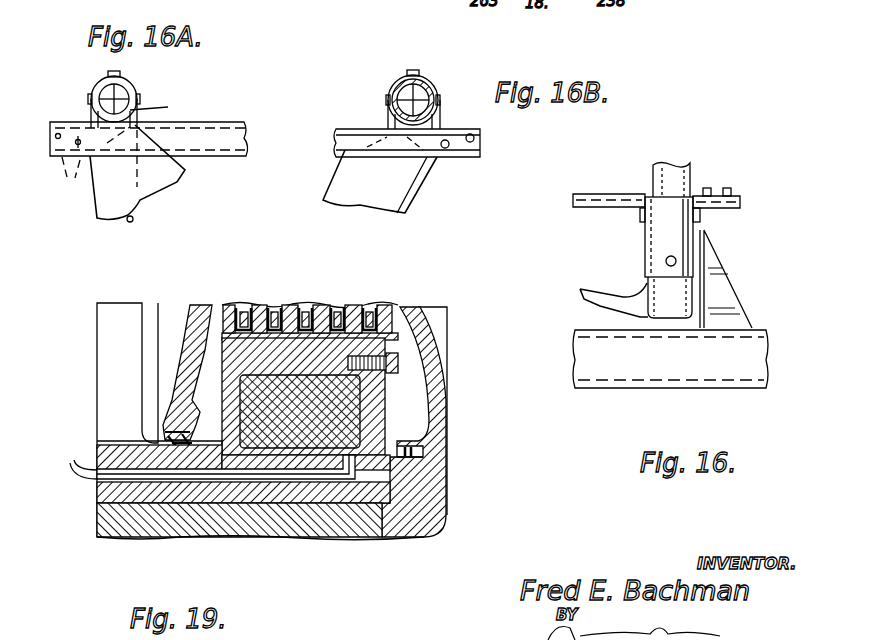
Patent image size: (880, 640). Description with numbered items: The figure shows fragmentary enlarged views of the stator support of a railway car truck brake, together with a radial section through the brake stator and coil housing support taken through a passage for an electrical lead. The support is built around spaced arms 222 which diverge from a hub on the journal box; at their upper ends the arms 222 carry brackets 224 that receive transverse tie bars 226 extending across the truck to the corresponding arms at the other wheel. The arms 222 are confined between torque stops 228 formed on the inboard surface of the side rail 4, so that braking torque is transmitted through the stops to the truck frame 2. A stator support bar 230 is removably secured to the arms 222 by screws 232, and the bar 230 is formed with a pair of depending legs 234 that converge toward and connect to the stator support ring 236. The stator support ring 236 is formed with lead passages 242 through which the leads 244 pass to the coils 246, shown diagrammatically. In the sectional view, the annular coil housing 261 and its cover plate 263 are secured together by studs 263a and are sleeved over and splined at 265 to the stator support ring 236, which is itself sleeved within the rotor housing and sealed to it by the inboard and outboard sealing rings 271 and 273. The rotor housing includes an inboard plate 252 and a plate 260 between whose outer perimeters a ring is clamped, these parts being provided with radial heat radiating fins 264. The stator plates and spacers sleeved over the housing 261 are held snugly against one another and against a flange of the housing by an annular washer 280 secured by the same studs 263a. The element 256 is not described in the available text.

In FIG. 16, the truck frame 2 is at (764, 392).
In FIG. 16, the side rail 4 is at (606, 370).
In FIG. 16A, the arms 222 is at (170, 180).
In FIG. 16B, the arms 222 is at (400, 195).
In FIG. 16, the arms 222 is at (588, 296).
In FIG. 16A, the brackets 224 is at (136, 88).
In FIG. 16B, the brackets 224 is at (432, 82).
In FIG. 16, the brackets 224 is at (657, 240).
In FIG. 16A, the tie bars 226 is at (165, 234).
In FIG. 16B, the tie bars 226 is at (402, 88).
In FIG. 16, the tie bars 226 is at (692, 168).
In FIG. 16, the torque stops 228 is at (706, 298).
In FIG. 16A, the stator support bar 230 is at (236, 126).
In FIG. 16B, the stator support bar 230 is at (346, 146).
In FIG. 16, the stator support bar 230 is at (601, 192).
In FIG. 16A, the screws 232 is at (70, 163).
In FIG. 16B, the screws 232 is at (472, 136).
In FIG. 16, the screws 232 is at (731, 190).
In FIG. 19, the depending legs 234 is at (106, 332).
In FIG. 19, the stator support ring 236 is at (140, 497).
In FIG. 19, the lead passages 242 is at (199, 485).
In FIG. 19, the leads 244 is at (82, 468).
In FIG. 19, the coils 246 is at (303, 430).
In FIG. 19, the inboard plate 252 is at (420, 312).
In FIG. 19, the hub 256 is at (172, 535).
In FIG. 19, the inboard segment or plate 260 is at (198, 304).
In FIG. 19, the annular coil housing 261 is at (232, 368).
In FIG. 19, the cover plate 263 is at (380, 408).
In FIG. 19, the studs 263a is at (398, 362).
In FIG. 19, the heat radiating fins 264 is at (178, 315).
In FIG. 19, the spline 265 is at (233, 434).
In FIG. 19, the inboard sealing ring 271 is at (420, 456).
In FIG. 19, the outboard sealing ring 273 is at (160, 432).
In FIG. 19, the annular washer 280 is at (390, 336).